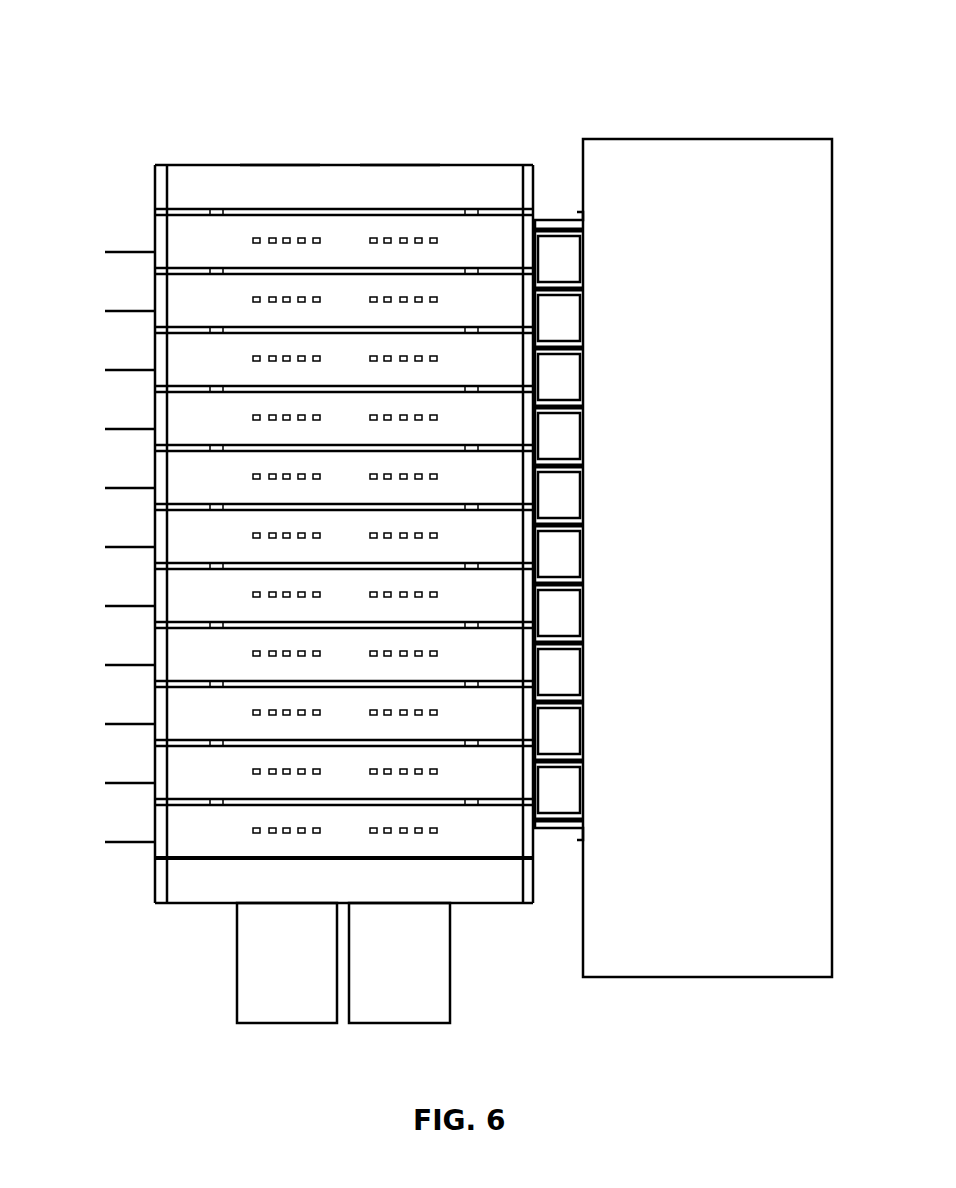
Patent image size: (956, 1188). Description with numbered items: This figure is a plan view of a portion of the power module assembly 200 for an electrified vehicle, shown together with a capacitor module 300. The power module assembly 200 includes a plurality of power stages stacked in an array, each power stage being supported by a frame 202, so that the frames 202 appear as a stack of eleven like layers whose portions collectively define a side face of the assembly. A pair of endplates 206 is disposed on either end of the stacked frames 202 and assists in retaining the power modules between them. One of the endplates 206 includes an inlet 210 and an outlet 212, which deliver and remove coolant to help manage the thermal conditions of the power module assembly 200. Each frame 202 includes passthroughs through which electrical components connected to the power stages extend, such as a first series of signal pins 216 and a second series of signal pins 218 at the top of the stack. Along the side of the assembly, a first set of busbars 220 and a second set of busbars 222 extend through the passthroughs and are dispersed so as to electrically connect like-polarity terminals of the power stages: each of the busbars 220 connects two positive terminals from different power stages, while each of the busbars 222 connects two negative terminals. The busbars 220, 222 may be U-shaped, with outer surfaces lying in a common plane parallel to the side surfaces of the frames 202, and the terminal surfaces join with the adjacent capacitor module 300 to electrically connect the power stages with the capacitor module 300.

The power module assembly 200 is at (160, 108).
The frame 202 is at (228, 253).
The endplate 206 is at (187, 165).
The inlet 210 is at (237, 1007).
The outlet 212 is at (448, 1003).
The first series of signal pins 216 is at (276, 150).
The second series of signal pins 218 is at (396, 150).
The first set of busbars 220 is at (570, 271).
The second set of busbars 222 is at (570, 330).
The capacitor module 300 is at (783, 139).